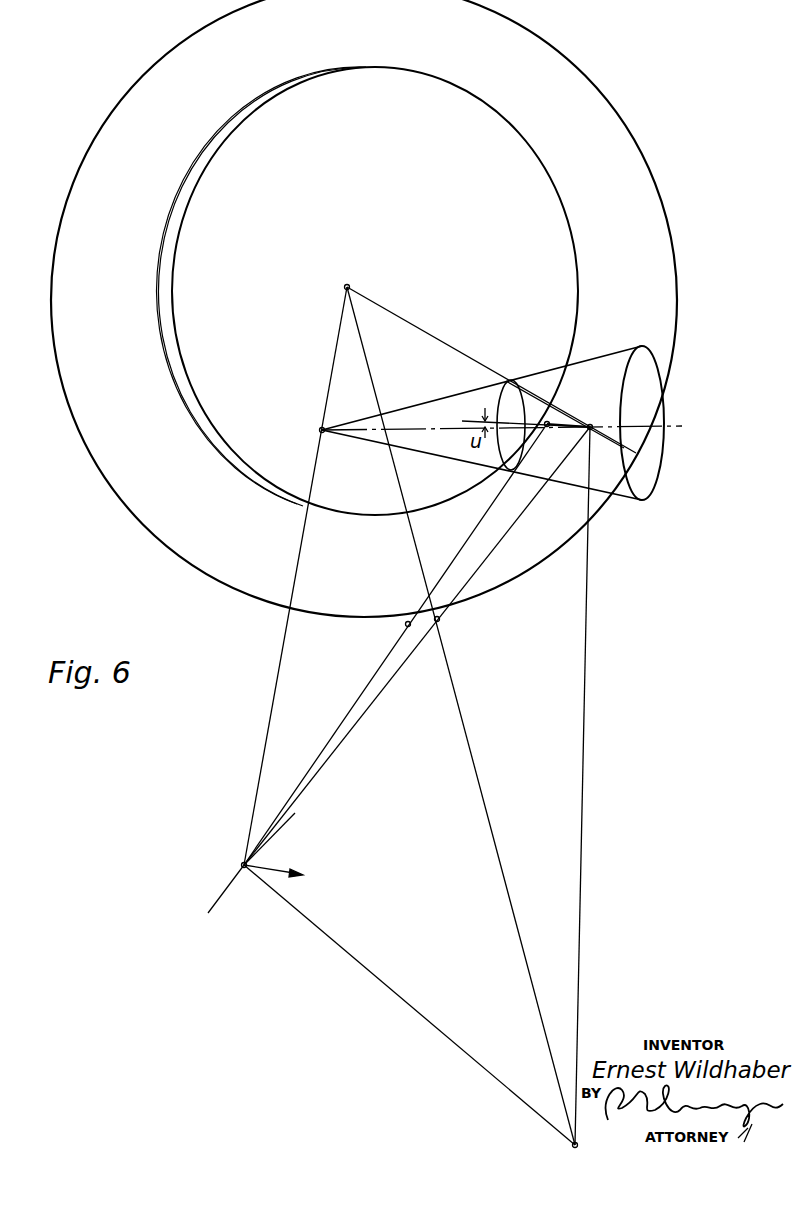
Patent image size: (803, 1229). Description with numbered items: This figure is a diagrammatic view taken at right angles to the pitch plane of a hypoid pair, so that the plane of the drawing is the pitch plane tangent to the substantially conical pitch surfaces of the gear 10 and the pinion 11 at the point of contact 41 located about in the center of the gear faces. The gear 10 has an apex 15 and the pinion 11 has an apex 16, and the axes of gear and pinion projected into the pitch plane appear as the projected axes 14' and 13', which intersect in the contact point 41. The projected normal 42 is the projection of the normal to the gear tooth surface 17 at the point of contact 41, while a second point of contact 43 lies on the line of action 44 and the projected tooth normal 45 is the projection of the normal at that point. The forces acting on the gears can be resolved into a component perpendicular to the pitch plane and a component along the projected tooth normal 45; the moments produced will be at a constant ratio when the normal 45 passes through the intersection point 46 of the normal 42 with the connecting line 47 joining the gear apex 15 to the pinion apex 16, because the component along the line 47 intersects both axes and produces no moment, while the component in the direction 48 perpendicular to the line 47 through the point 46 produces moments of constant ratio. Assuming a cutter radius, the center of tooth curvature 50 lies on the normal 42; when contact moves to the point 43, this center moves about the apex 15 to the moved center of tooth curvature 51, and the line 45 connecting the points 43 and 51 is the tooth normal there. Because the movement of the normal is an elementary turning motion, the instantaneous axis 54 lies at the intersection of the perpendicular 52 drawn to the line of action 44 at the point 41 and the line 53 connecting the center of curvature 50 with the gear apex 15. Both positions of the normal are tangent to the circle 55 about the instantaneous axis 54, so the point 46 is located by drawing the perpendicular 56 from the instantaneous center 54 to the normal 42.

The gear 10 is at (666, 306).
The pinion 11 is at (650, 492).
The gear apex 15 is at (350, 285).
The pinion apex 16 is at (318, 429).
The projected gear axis 14' is at (491, 370).
The gear tooth surface 17 is at (552, 400).
The projected pinion axis 13' is at (509, 414).
The line of action 44 is at (485, 408).
The second point of contact 43 is at (546, 420).
The point of contact 41 is at (590, 424).
The projected tooth normal 45 is at (477, 527).
The projected normal 42 is at (508, 541).
The center of tooth curvature 50 is at (440, 619).
The moved center of tooth curvature 51 is at (405, 626).
The connecting line 47 is at (270, 715).
The line connecting center of curvature with gear apex 53 is at (484, 796).
The perpendicular to the line of action 52 is at (586, 740).
The perpendicular from the instantaneous center 56 is at (410, 1004).
The direction of force component 48 is at (288, 860).
The circle about instantaneous axis 55 is at (208, 913).
The intersection point of normals 46 is at (244, 869).
The instantaneous axis 54 is at (578, 1145).